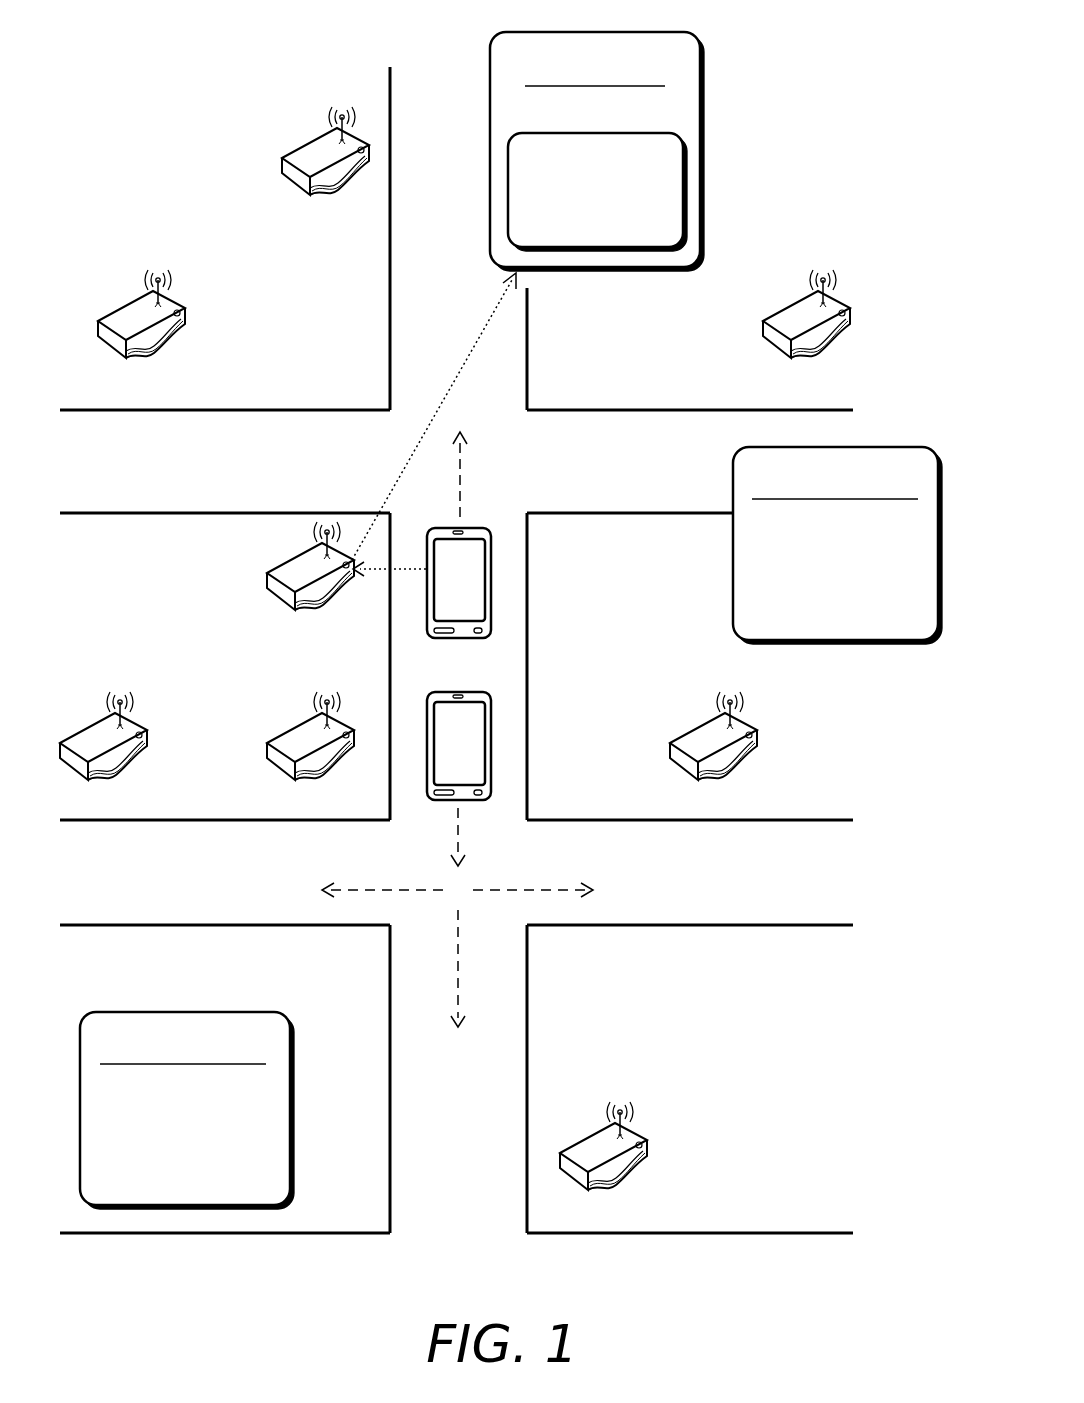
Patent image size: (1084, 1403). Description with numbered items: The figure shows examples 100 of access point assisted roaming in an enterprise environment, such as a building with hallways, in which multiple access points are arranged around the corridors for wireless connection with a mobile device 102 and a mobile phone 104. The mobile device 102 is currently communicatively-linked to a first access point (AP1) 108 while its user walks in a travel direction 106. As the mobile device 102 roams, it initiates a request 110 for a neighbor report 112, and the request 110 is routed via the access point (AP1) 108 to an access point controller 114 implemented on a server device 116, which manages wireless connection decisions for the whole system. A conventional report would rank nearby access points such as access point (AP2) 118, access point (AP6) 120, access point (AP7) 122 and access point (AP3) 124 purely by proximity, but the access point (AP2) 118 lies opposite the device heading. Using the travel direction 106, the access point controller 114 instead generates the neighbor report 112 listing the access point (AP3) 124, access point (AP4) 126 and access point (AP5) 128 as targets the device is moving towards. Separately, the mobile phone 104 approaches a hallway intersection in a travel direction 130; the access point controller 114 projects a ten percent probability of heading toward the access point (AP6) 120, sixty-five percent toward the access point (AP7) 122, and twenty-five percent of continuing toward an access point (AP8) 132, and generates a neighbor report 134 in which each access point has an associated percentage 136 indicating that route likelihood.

The examples of access point assisted roaming 100 is at (242, 58).
The mobile device 102 is at (440, 613).
The mobile phone 104 is at (440, 774).
The travel direction 106 is at (488, 474).
The first access point (AP1) 108 is at (304, 636).
The request 110 is at (433, 334).
The neighbor report 112 is at (878, 446).
The access point controller 114 is at (576, 224).
The server device 116 is at (576, 112).
The access point (AP2) 118 is at (305, 807).
The access point (AP6) 120 is at (98, 807).
The access point (AP7) 122 is at (708, 807).
The access point (AP3) 124 is at (136, 386).
The access point (AP4) 126 is at (801, 386).
The access point (AP5) 128 is at (320, 219).
The travel direction 130 is at (404, 842).
The access point (AP8) 132 is at (598, 1219).
The neighbor report 134 is at (170, 1012).
The percentage 136 is at (242, 1135).